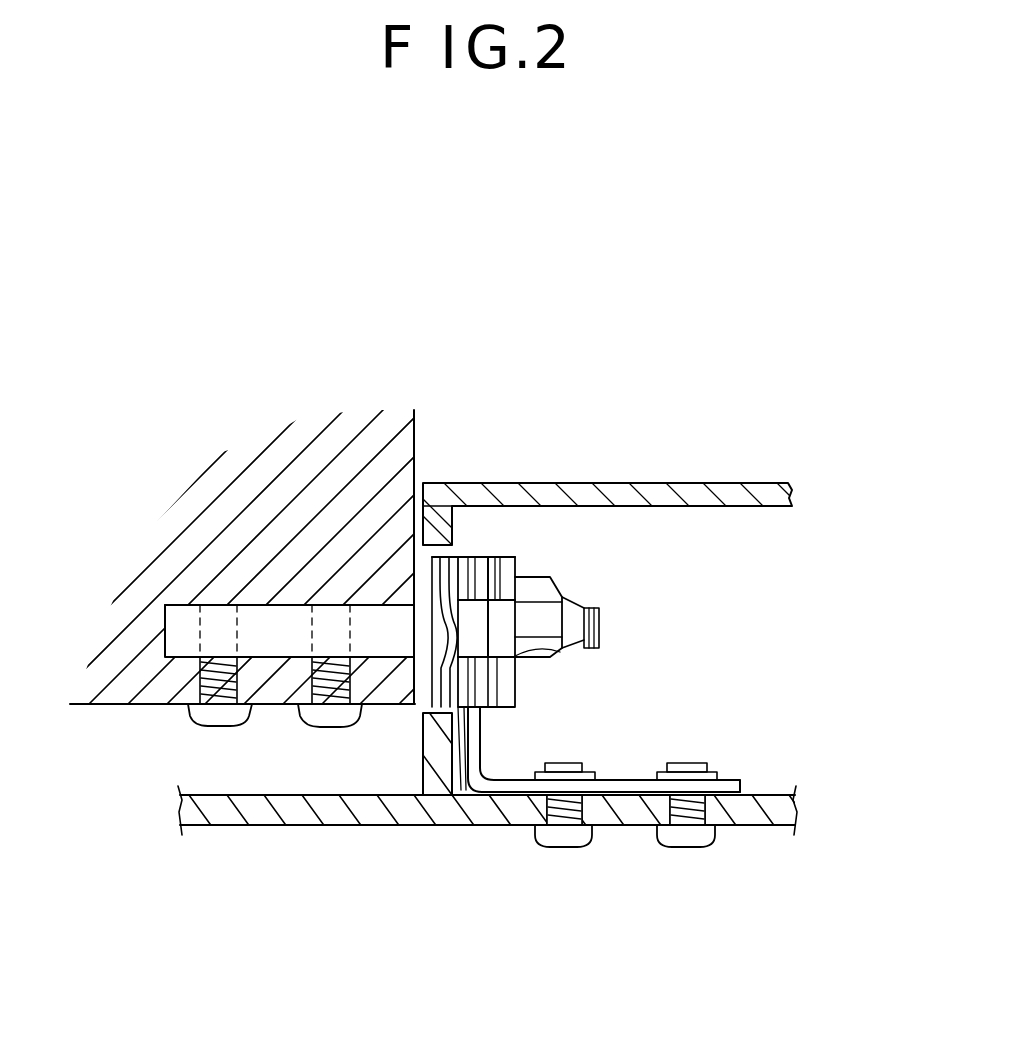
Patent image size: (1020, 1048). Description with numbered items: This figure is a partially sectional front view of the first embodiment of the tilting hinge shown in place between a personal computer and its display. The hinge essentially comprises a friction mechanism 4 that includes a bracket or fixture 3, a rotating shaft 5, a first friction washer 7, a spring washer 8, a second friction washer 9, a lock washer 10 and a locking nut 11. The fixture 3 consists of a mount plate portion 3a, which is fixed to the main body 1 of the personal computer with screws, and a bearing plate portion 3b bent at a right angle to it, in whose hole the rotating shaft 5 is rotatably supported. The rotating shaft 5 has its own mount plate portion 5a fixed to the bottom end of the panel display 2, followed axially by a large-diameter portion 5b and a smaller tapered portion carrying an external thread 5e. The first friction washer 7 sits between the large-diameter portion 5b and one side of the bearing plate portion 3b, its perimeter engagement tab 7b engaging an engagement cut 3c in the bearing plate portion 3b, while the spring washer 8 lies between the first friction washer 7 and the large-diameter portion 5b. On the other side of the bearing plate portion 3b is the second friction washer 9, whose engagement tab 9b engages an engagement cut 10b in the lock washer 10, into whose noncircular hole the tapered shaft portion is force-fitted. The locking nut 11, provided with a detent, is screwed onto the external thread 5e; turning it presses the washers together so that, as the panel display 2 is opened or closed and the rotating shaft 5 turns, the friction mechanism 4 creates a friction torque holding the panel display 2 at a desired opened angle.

The main body 1 is at (345, 826).
The panel display 2 is at (113, 692).
The bracket or fixture 3 is at (486, 802).
The mount plate portion 3a is at (631, 792).
The bearing plate portion 3b is at (478, 557).
The engagement cut 3c is at (494, 708).
The friction mechanism 4 is at (521, 545).
The rotating shaft 5 is at (393, 587).
The mount plate portion 5a is at (240, 604).
The large-diameter portion 5b is at (413, 545).
The external thread 5e is at (561, 598).
The first friction washer 7 is at (468, 798).
The engagement tab 7b is at (466, 648).
The spring washer 8 is at (441, 540).
The second friction washer 9 is at (497, 557).
The engagement tab 9b is at (598, 612).
The lock washer 10 is at (518, 692).
The engagement cut 10b is at (515, 657).
The locking nut 11 is at (566, 580).